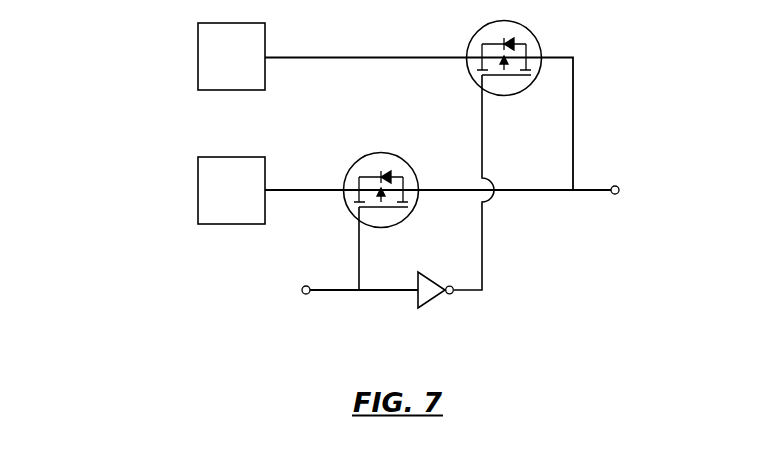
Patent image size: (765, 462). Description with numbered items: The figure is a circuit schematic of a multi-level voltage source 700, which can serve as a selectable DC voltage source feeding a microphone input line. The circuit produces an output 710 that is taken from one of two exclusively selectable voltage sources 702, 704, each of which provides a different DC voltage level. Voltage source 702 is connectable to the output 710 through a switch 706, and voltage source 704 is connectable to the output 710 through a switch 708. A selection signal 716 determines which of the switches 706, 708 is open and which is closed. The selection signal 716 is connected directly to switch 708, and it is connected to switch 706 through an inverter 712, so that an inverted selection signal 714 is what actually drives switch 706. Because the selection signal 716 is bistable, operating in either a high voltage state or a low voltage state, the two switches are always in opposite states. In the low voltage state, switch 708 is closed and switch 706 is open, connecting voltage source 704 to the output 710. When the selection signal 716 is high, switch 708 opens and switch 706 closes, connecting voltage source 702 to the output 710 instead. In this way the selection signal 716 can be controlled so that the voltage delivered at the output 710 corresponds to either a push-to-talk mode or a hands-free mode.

The multi-level voltage source 700 is at (101, 13).
The voltage source 702 is at (198, 57).
The voltage source 704 is at (198, 182).
The switch 706 is at (515, 96).
The switch 708 is at (392, 153).
The output 710 is at (580, 191).
The inverter 712 is at (428, 305).
The inverted selection signal 714 is at (482, 231).
The selection signal 716 is at (368, 291).